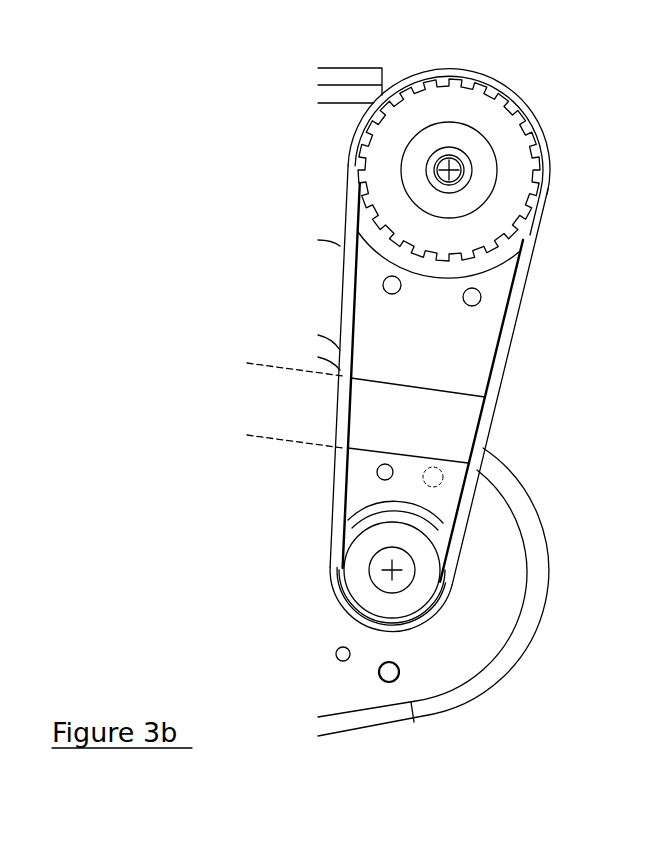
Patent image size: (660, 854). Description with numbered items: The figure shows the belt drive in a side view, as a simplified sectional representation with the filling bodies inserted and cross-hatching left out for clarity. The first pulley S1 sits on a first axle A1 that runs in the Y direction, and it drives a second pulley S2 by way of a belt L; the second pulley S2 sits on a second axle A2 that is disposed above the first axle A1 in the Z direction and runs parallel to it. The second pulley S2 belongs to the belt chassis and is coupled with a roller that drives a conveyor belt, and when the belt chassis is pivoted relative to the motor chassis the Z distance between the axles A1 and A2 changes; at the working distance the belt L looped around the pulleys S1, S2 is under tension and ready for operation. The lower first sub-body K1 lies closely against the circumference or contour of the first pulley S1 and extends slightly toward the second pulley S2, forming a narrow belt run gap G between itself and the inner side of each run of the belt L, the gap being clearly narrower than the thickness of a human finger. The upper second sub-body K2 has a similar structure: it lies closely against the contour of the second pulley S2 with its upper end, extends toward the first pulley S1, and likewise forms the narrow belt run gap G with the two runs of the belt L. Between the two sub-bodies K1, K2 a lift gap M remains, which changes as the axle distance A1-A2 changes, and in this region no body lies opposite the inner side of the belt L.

The first axle A1 is at (390, 580).
The second axle A2 is at (441, 160).
The first pulley S1 is at (418, 587).
The second pulley S2 is at (513, 141).
The belt L is at (527, 238).
The belt run gap G is at (380, 303).
The lift gap M is at (259, 366).
The first sub-body K1 is at (362, 474).
The second sub-body K2 is at (462, 358).